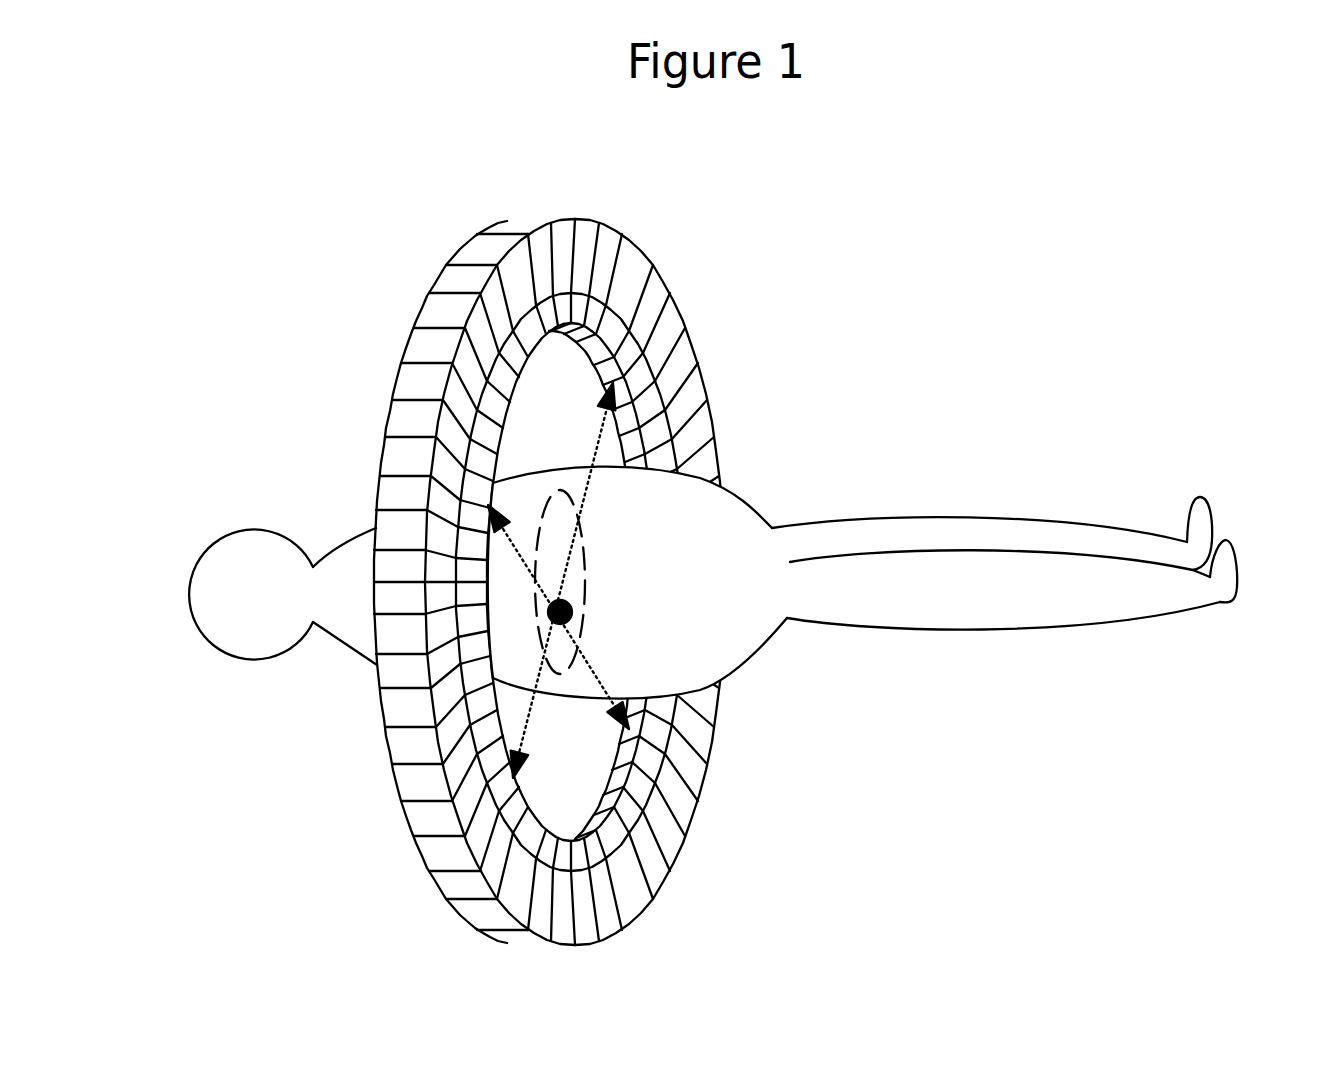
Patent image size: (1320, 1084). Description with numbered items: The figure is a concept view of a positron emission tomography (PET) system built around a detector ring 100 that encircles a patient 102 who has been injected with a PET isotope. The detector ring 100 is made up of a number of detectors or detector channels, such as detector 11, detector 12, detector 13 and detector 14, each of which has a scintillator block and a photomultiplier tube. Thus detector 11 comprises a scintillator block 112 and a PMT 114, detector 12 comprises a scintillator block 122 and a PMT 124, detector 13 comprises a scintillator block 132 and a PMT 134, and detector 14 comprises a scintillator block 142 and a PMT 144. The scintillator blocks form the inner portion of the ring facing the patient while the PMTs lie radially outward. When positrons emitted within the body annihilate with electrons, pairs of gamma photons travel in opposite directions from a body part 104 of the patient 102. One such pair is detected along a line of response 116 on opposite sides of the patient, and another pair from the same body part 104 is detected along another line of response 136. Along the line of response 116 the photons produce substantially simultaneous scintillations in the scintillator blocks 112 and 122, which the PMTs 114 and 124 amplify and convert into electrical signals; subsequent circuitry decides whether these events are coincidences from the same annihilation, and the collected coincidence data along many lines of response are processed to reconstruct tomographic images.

The detector ring 100 is at (455, 196).
The patient 102 is at (256, 637).
The body part 104 is at (574, 598).
The detector 11 is at (723, 400).
The scintillator block 112 is at (665, 350).
The PMT 114 is at (653, 297).
The line of response (LOR) 116 is at (598, 432).
The detector 12 is at (403, 772).
The scintillator block 122 is at (507, 802).
The PMT 124 is at (497, 852).
The detector 13 is at (715, 774).
The scintillator block 132 is at (663, 745).
The PMT 134 is at (677, 795).
The line of response (LOR) 136 is at (588, 668).
The detector 14 is at (386, 402).
The scintillator block 142 is at (477, 497).
The PMT 144 is at (410, 458).